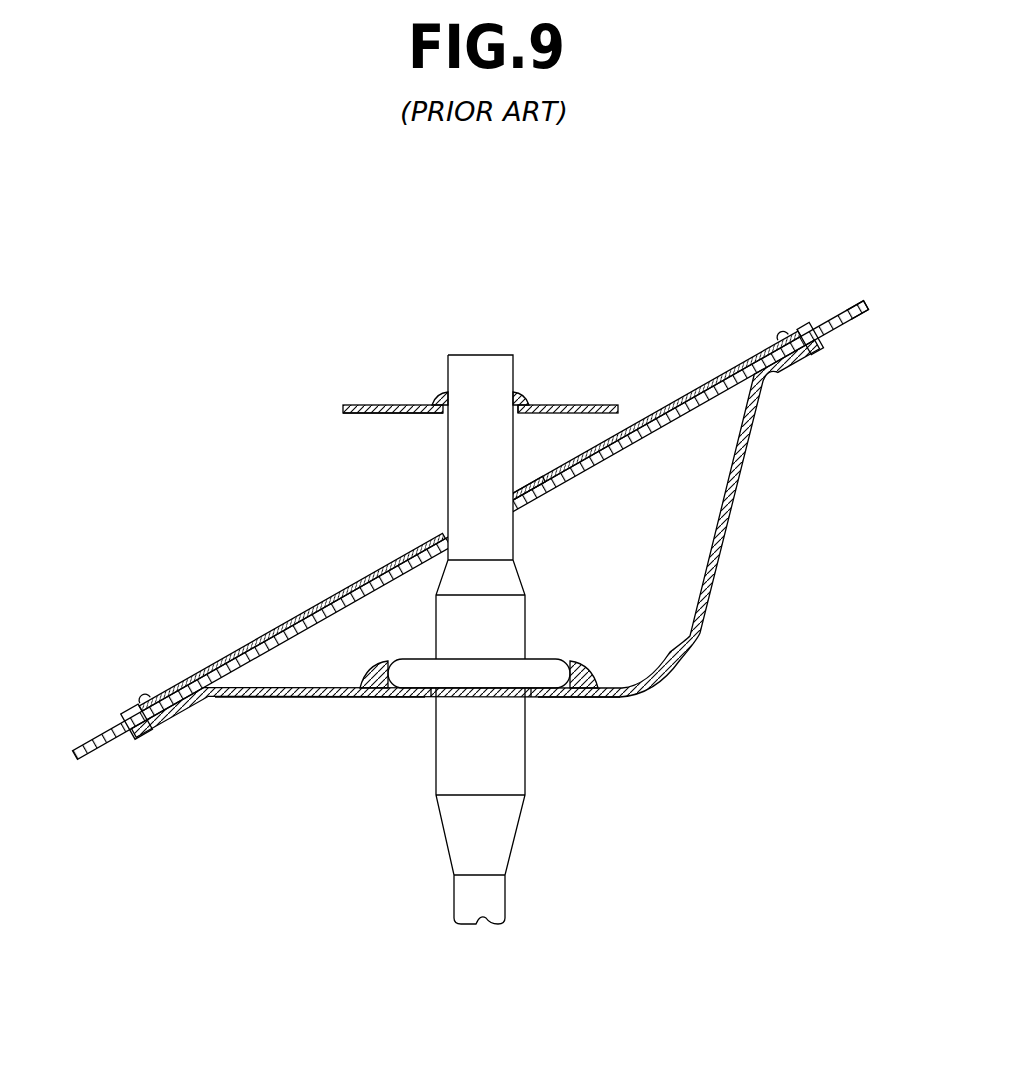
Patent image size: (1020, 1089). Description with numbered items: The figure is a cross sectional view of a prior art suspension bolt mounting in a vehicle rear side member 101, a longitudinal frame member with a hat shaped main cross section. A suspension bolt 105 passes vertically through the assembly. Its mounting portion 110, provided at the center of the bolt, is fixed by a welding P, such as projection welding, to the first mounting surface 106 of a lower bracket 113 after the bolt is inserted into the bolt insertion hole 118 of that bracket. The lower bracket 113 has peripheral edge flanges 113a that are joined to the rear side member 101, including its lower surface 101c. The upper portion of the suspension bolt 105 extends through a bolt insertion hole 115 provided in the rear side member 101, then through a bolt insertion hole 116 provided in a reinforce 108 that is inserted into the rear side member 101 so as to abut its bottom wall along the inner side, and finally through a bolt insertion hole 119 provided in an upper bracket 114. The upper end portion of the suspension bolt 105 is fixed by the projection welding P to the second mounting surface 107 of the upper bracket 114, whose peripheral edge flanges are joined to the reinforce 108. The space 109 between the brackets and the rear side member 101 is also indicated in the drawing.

The rear side member 101 is at (834, 318).
The lower surface of rear side member 101c is at (852, 324).
The suspension bolt 105 is at (527, 770).
The first mounting surface 106 is at (303, 699).
The second mounting surface 107 is at (358, 404).
The reinforce 108 is at (736, 366).
The space between board and bracket 109 is at (678, 507).
The mounting portion 110 is at (557, 658).
The lower bracket 113 is at (716, 573).
The peripheral edge flanges 113a is at (788, 368).
The upper bracket 114 is at (363, 418).
The bolt insertion hole 115 is at (521, 508).
The bolt insertion hole 116 is at (447, 533).
The bolt insertion hole 118 is at (432, 700).
The bolt insertion hole 119 is at (520, 418).
The welding P is at (437, 397).